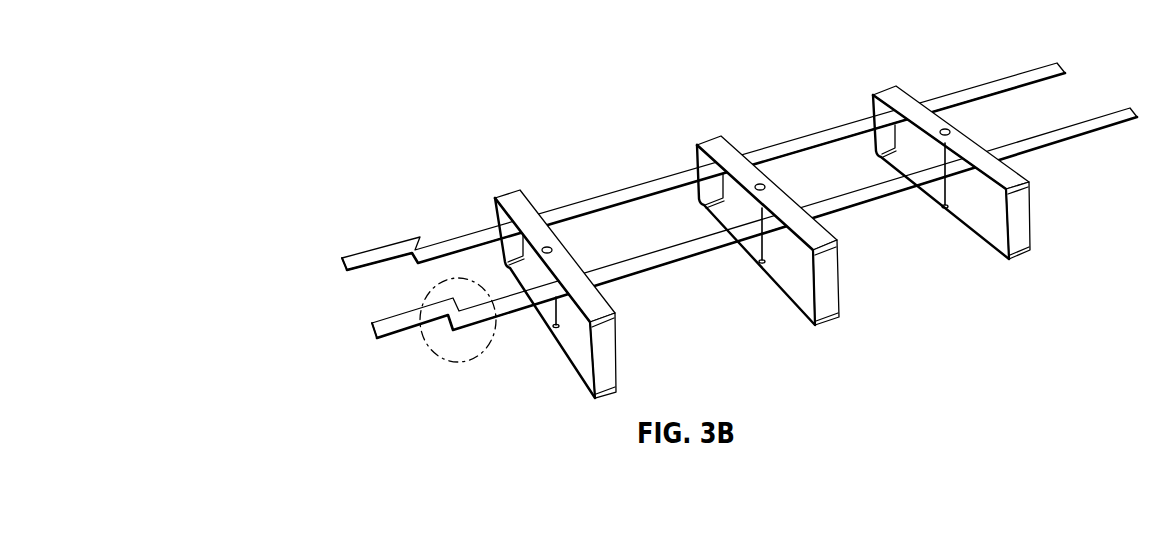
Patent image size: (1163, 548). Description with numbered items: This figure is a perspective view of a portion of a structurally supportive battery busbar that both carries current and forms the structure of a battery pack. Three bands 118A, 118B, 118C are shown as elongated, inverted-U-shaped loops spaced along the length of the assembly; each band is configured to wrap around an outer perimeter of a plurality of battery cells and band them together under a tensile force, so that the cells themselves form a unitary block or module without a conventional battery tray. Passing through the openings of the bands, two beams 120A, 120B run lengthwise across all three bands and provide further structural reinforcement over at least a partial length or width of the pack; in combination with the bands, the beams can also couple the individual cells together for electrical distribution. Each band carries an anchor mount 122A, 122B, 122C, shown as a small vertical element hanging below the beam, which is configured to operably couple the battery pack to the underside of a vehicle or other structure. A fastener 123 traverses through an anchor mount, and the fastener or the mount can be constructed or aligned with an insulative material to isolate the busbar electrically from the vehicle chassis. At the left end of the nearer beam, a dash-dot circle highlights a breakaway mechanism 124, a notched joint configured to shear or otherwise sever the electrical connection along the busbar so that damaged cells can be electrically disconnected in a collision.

The band 118A is at (513, 205).
The band 118B is at (795, 204).
The band 118C is at (893, 97).
The beam 120A is at (1033, 77).
The beam 120B is at (1107, 118).
The anchor mount 122A is at (556, 304).
The anchor mount 122B is at (760, 264).
The anchor mount 122C is at (942, 208).
The fastener 123 is at (770, 238).
The breakaway mechanism 124 is at (447, 363).